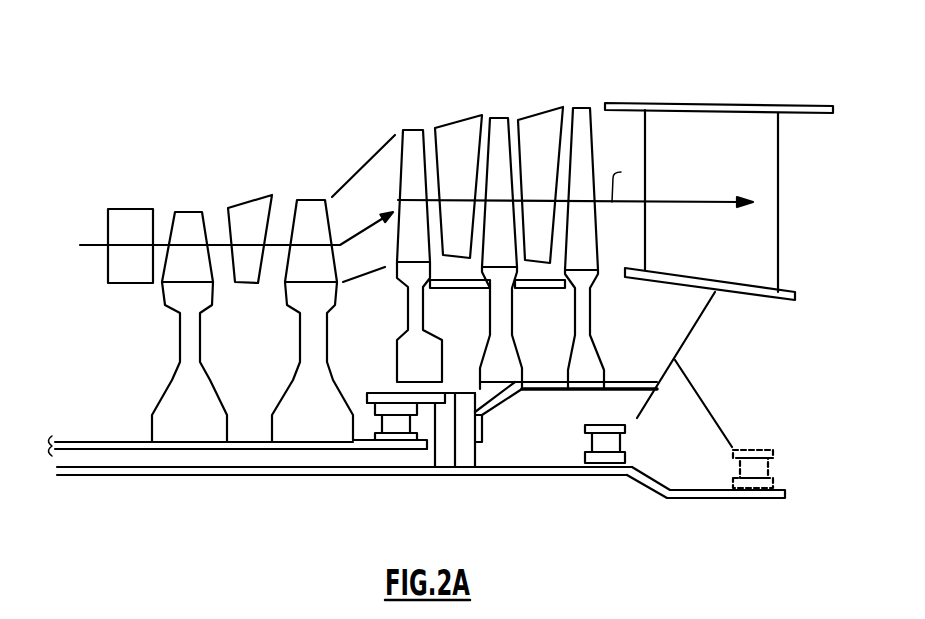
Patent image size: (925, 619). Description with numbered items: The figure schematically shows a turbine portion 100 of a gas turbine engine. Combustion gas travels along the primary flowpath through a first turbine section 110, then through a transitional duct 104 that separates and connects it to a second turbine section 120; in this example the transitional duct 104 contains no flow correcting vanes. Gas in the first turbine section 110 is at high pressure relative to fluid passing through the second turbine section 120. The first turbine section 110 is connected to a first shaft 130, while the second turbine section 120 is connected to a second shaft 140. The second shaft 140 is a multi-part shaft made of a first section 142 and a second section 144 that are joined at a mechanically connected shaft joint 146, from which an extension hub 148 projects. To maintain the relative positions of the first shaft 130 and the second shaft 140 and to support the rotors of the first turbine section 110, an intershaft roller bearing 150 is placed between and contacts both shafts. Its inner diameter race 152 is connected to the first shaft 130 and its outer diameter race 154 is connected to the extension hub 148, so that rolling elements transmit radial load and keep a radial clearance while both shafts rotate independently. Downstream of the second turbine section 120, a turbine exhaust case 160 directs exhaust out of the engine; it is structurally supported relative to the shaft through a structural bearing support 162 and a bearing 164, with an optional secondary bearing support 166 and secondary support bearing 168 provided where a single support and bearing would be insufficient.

The turbine portion 100 is at (497, 72).
The transitional duct 104 is at (366, 218).
The first turbine section 110 is at (233, 148).
The second turbine section 120 is at (527, 236).
The first shaft 130 is at (360, 446).
The second shaft 140 is at (622, 471).
The first section 142 is at (530, 468).
The second section 144 is at (416, 469).
The shaft joint 146 is at (457, 444).
The extension hub 148 is at (433, 396).
The intershaft roller bearing 150 is at (389, 450).
The inner diameter race 152 is at (378, 444).
The outer diameter race 154 is at (392, 404).
The turbine exhaust case 160 is at (750, 128).
The structural bearing support 162 is at (703, 313).
The bearing 164 is at (613, 446).
The secondary bearing support 166 is at (710, 413).
The secondary support bearing 168 is at (757, 470).